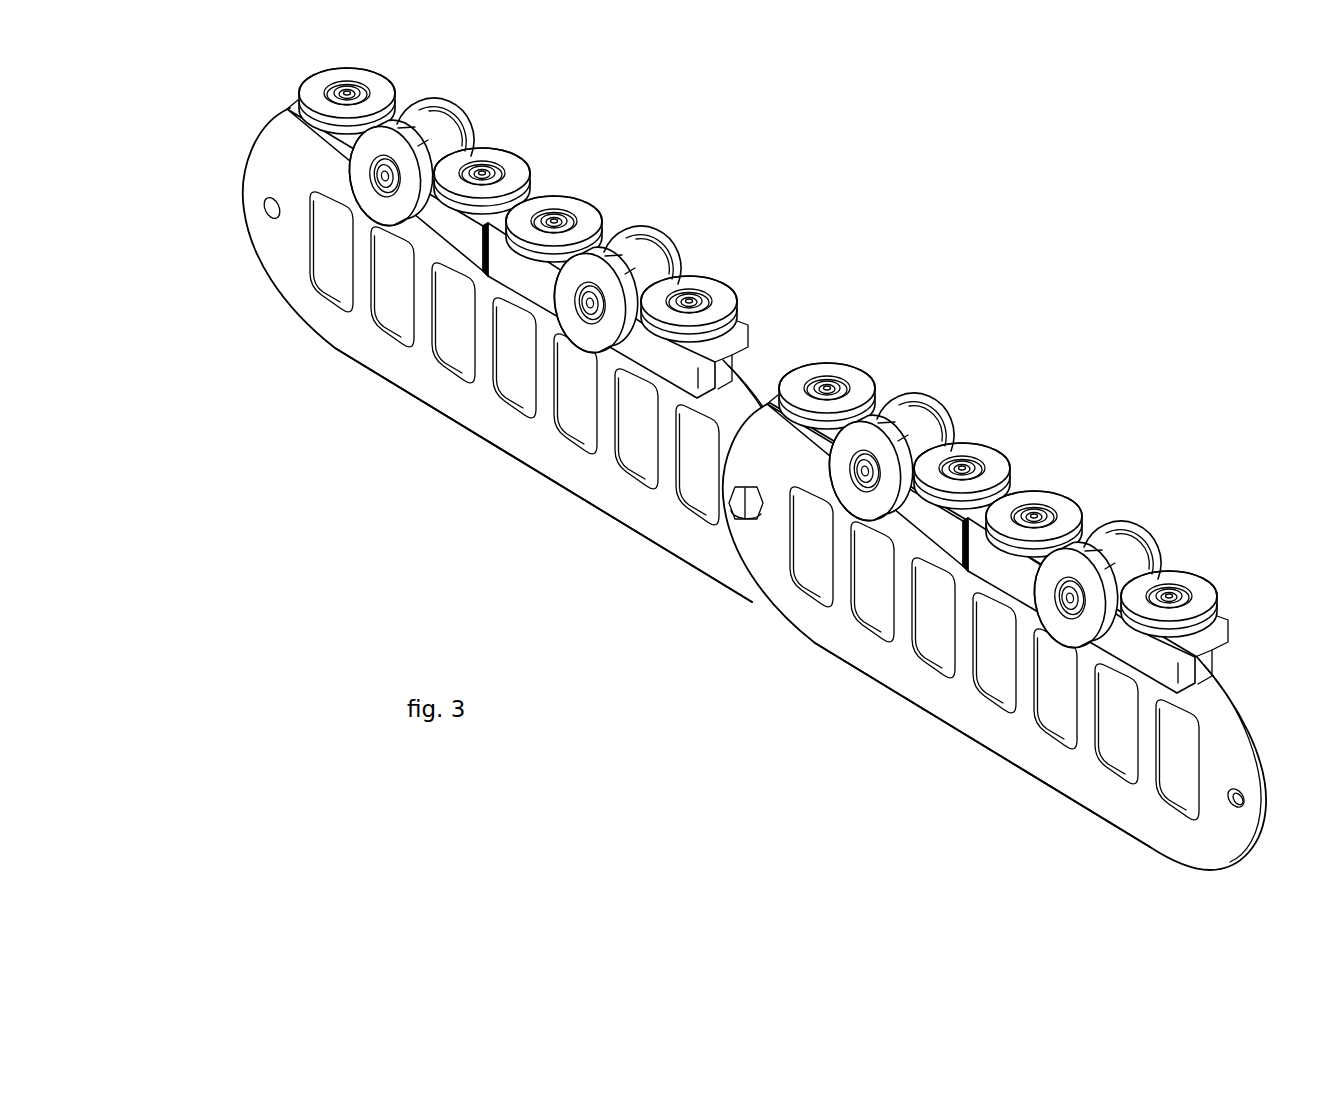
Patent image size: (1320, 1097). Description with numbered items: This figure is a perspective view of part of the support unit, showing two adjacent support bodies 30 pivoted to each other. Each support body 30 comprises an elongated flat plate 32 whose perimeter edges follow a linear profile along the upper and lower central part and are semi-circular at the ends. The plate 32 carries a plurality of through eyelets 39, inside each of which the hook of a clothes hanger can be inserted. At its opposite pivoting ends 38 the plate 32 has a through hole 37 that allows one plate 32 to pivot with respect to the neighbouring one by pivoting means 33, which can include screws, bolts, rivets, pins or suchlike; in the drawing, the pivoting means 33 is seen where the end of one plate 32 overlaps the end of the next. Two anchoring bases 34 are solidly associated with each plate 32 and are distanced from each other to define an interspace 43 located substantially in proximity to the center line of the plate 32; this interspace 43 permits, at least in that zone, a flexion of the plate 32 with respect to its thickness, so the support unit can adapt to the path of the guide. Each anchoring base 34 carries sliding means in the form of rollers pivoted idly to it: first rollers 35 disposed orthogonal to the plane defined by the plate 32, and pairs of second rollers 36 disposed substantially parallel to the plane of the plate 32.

The support body 30 is at (741, 457).
The flat plate 32 is at (432, 421).
The pivoting means 33 is at (756, 535).
The anchoring base 34 is at (297, 127).
The first rollers 35 is at (377, 85).
The second rollers 36 is at (453, 122).
The through hole 37 is at (285, 205).
The pivoting end 38 is at (265, 168).
The through eyelets 39 is at (332, 300).
The interspace 43 is at (478, 266).